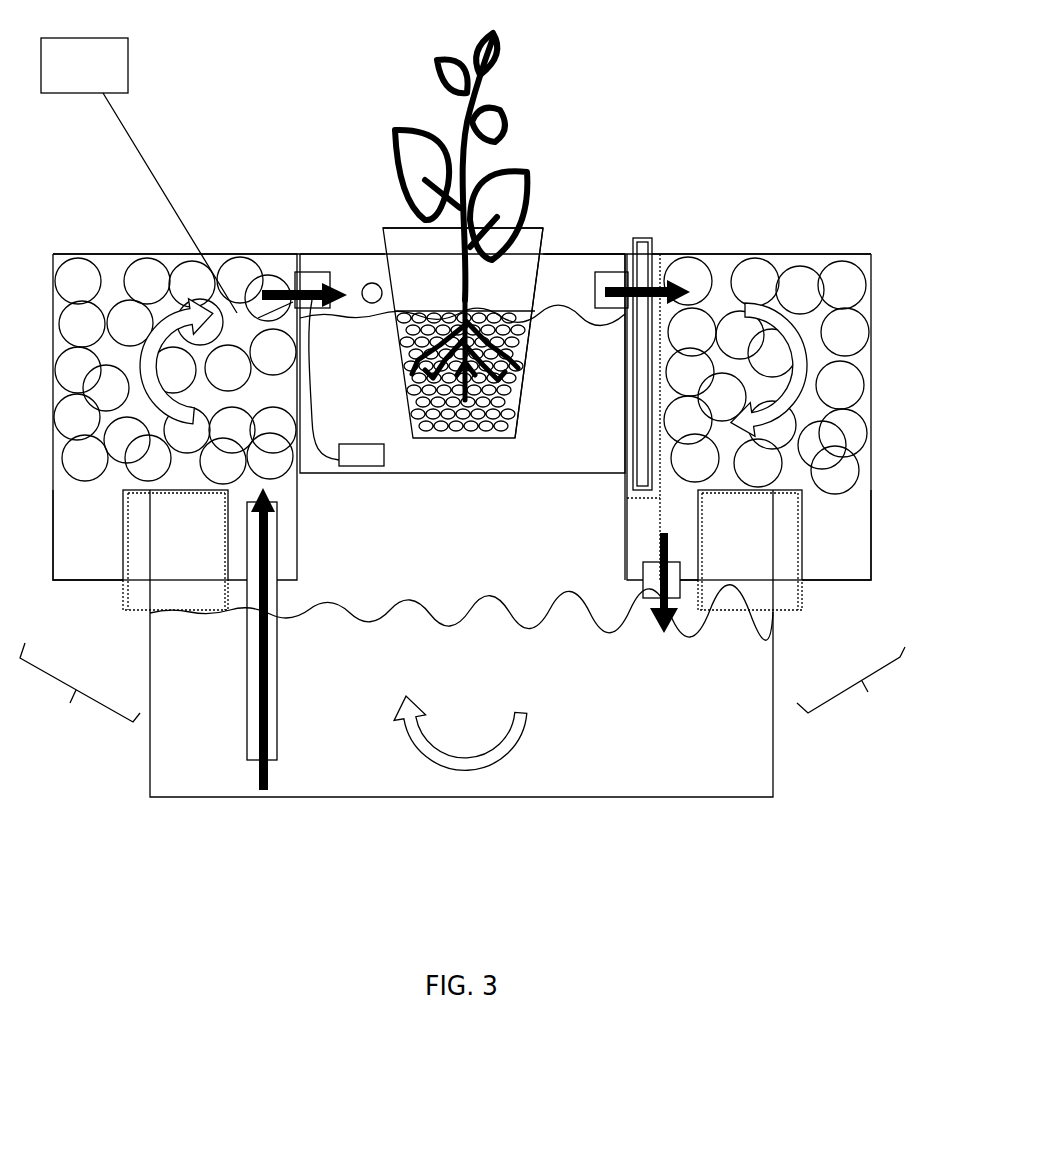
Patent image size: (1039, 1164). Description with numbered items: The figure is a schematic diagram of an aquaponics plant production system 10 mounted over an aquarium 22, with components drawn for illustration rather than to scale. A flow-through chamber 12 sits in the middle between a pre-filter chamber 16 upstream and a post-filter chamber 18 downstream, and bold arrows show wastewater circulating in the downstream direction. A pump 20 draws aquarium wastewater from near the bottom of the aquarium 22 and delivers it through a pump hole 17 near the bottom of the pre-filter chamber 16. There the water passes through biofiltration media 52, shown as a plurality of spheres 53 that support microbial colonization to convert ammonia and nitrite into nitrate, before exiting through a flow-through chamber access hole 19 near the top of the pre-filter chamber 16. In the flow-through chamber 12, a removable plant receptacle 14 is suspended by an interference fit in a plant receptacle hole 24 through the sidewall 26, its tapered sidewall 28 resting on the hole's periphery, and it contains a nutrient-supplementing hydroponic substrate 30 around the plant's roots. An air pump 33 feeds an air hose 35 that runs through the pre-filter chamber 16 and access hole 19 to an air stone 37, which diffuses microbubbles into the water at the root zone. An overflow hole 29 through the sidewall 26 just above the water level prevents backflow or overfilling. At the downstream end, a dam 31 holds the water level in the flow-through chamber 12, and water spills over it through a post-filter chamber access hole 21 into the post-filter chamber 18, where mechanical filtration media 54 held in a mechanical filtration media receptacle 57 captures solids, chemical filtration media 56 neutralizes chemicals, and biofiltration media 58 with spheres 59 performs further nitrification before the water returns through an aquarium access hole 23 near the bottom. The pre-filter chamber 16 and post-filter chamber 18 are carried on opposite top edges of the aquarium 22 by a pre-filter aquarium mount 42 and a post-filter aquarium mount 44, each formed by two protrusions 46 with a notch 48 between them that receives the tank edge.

The aquaponics plant production system 10 is at (716, 103).
The flow-through chamber 12 is at (307, 265).
The removable plant receptacle 14 is at (395, 243).
The pre-filter chamber 16 is at (107, 265).
The pump hole 17 is at (280, 586).
The post-filter chamber 18 is at (822, 255).
The flow-through chamber access hole 19 is at (293, 270).
The pump 20 is at (247, 722).
The post-filter chamber access hole 21 is at (623, 307).
The aquarium 22 is at (747, 783).
The aquarium access hole 23 is at (645, 585).
The plant receptacle hole 24 is at (380, 249).
The sidewall 26 is at (614, 250).
The sidewall 28 is at (546, 231).
The overflow hole 29 is at (364, 285).
The nutrient-supplementing hydroponic substrate 30 is at (528, 325).
The dam 31 is at (627, 380).
The air pump 33 is at (118, 63).
The air hose 35 is at (132, 157).
The air stone 37 is at (358, 455).
The pre-filter aquarium mount 42 is at (80, 689).
The post-filter aquarium mount 44 is at (851, 687).
The protrusion 46 is at (88, 560).
The notch 48 is at (138, 517).
The biofiltration media 52 is at (76, 328).
The sphere 53 is at (238, 268).
The mechanical filtration media 54 is at (650, 240).
The chemical filtration media 56 is at (665, 253).
The mechanical filtration media receptacle 57 is at (658, 478).
The biofiltration media 58 is at (865, 260).
The sphere 59 is at (845, 328).